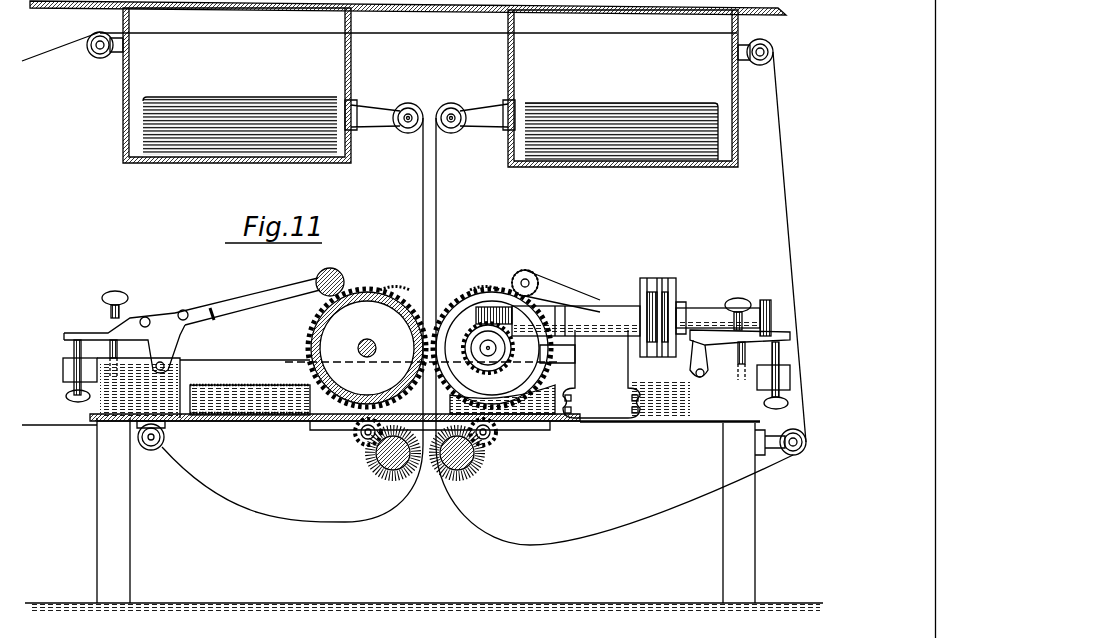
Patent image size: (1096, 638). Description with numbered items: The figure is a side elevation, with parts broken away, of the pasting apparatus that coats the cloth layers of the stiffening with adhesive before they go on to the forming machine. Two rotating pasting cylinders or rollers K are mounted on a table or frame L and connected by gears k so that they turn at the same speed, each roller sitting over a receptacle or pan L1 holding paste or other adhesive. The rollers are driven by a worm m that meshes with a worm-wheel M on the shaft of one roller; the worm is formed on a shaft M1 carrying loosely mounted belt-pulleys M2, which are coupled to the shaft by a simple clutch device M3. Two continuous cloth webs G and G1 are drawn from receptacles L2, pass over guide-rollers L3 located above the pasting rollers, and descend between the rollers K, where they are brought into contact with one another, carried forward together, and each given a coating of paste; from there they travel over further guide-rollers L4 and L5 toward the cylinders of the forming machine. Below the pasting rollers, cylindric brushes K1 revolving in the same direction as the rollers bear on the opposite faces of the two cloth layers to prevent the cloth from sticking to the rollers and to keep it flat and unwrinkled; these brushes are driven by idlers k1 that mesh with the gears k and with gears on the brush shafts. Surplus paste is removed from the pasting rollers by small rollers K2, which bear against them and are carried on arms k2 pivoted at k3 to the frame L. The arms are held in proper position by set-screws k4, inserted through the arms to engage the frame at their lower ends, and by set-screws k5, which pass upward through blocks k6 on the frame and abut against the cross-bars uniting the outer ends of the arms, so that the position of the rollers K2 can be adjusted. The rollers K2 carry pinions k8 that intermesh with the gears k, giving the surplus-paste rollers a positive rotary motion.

The cloth web G is at (682, 94).
The cloth web G1 is at (305, 102).
The pasting cylinder K is at (422, 348).
The cylindric brush K1 is at (425, 458).
The small roller K2 is at (328, 272).
The gear k is at (372, 288).
The idler k1 is at (427, 433).
The arm k2 is at (228, 307).
The pivot k3 is at (161, 360).
The set-screw k4 is at (427, 358).
The set-screw k5 is at (790, 353).
The block k6 is at (426, 374).
The pinion k8 is at (520, 280).
The table or frame L is at (422, 317).
The receptacle or pan L1 is at (252, 385).
The receptacle L2 is at (430, 87).
The guide-roller L3 is at (430, 128).
The guide-roller L4 is at (471, 447).
The guide-roller L5 is at (755, 62).
The worm-wheel M is at (498, 348).
The shaft M1 is at (580, 330).
The belt-pulley M2 is at (658, 307).
The clutch device M3 is at (700, 318).
The worm m is at (494, 308).